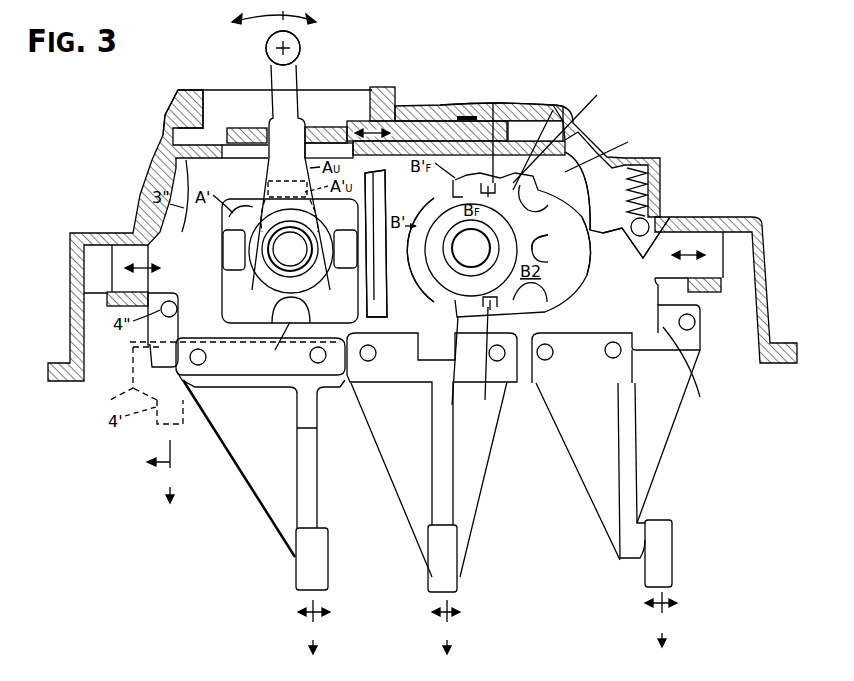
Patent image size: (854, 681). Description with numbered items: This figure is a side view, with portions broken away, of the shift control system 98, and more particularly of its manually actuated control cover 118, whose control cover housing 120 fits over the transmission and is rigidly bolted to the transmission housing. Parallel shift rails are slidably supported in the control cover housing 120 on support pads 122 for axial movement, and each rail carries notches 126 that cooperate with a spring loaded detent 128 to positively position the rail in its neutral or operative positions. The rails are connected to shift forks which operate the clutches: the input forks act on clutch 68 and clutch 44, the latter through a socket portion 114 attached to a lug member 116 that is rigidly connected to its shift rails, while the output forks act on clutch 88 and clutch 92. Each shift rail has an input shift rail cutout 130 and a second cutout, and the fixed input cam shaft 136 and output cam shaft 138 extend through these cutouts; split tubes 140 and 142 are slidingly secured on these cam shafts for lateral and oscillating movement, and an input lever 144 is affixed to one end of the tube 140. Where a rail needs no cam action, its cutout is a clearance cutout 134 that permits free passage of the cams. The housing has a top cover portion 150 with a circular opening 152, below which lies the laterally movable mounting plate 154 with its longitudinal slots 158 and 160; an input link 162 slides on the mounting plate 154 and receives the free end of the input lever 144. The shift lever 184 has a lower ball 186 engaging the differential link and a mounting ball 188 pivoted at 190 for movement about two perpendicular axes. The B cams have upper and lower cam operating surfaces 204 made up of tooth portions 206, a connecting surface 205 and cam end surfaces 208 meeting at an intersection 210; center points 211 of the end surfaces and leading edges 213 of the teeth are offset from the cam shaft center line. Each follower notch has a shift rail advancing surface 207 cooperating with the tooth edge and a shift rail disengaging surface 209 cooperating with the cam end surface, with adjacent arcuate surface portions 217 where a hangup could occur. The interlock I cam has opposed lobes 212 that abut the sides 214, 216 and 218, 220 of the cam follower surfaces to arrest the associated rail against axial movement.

The shift control system 98 is at (468, 78).
The socket portion 114 is at (133, 385).
The lug member 116 is at (147, 347).
The control cover 118 is at (137, 170).
The control cover housing 120 is at (163, 122).
The support pads 122 is at (107, 298).
The notches 126 is at (645, 252).
The spring loaded detent 128 is at (648, 230).
The input shift rail cutout 130 is at (238, 293).
The clearance cutout 134 is at (380, 212).
The input cam shaft 136 is at (291, 251).
The output cam shaft 138 is at (471, 250).
The split tube 140 is at (272, 280).
The split tube 142 is at (450, 263).
The input lever 144 is at (270, 160).
The top cover portion 150 is at (498, 183).
The circular opening 152 is at (207, 90).
The mounting plate 154 is at (408, 120).
The longitudinal slot 158 is at (240, 150).
The longitudinal slot 160 is at (318, 125).
The input link 162 is at (348, 123).
The shift lever 184 is at (313, 25).
The lower ball 186 is at (270, 122).
The mounting ball 188 is at (300, 45).
The pivot 190 is at (268, 44).
The cam operating surfaces 204 is at (540, 105).
The connecting surface 205 is at (565, 348).
The tooth portions 206 is at (483, 165).
The shift rail advancing surface 207 is at (453, 188).
The cam end surfaces 208 is at (528, 208).
The shift rail disengaging surface 209 is at (563, 163).
The intersection 210 is at (537, 192).
The center points 211 is at (493, 103).
The lobes 212 is at (223, 265).
The leading edges 213 is at (472, 195).
The side of cam follower surface A' 214 is at (223, 243).
The side of cam follower surface A' 216 is at (377, 237).
The arcuate surface portions 217 is at (582, 208).
The side of cam follower surface B' 218 is at (425, 283).
The side of cam follower surface B' 220 is at (547, 252).
The clutch 44 is at (130, 485).
The clutch 68 is at (307, 637).
The clutch 88 is at (447, 637).
The clutch 92 is at (675, 629).